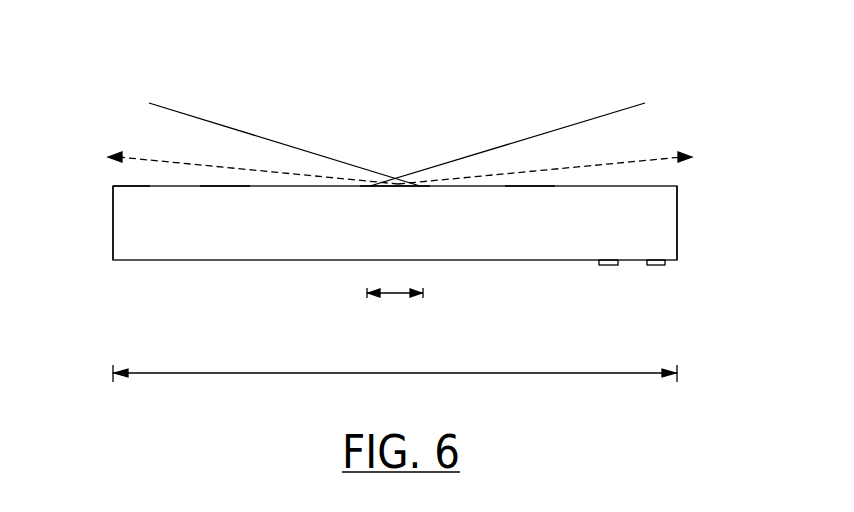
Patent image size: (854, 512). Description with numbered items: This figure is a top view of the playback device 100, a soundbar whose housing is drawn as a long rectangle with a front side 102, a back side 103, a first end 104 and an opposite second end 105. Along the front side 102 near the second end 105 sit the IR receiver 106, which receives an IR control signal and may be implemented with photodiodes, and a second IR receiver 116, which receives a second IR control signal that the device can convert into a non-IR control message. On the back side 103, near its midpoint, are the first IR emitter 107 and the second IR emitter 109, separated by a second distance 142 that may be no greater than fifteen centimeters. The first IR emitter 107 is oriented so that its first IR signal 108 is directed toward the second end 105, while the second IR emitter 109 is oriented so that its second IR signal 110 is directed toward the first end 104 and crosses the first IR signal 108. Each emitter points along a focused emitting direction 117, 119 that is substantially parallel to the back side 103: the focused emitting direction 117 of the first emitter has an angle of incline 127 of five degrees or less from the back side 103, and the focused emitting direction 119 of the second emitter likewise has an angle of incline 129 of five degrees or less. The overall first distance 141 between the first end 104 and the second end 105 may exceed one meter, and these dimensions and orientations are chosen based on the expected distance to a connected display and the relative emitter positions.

The playback device 100 is at (395, 92).
The front side 102 is at (165, 262).
The back side 103 is at (123, 185).
The first end 104 is at (112, 228).
The second end 105 is at (678, 235).
The IR receiver 106 is at (655, 266).
The first IR emitter 107 is at (370, 188).
The first IR signal 108 is at (605, 108).
The second IR emitter 109 is at (420, 188).
The second IR signal 110 is at (178, 108).
The second IR receiver 116 is at (608, 266).
The focused emitting direction 117 is at (661, 155).
The focused emitting direction 119 is at (147, 158).
The angle of incline 127 is at (530, 185).
The angle of incline 129 is at (224, 185).
The first distance 141 is at (565, 374).
The second distance 142 is at (392, 298).